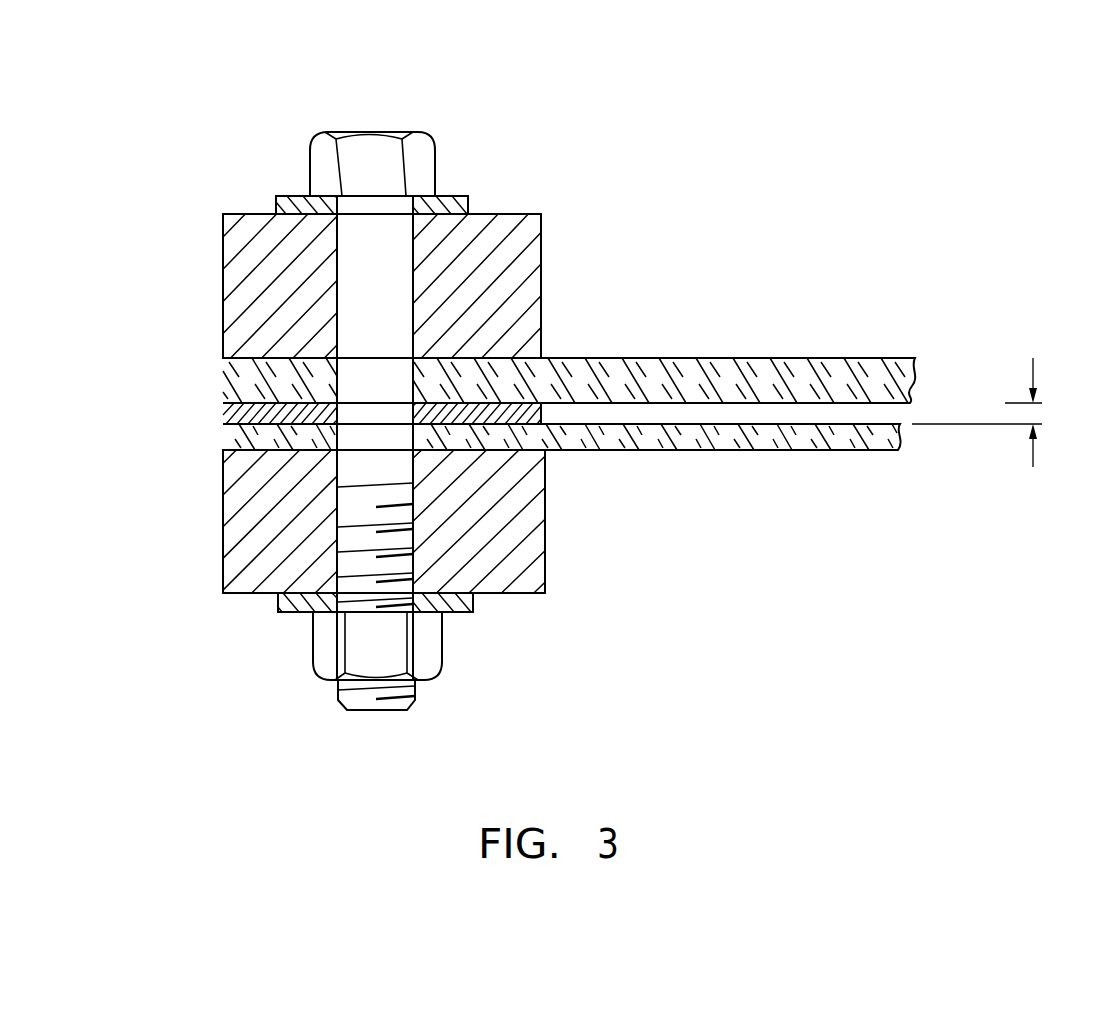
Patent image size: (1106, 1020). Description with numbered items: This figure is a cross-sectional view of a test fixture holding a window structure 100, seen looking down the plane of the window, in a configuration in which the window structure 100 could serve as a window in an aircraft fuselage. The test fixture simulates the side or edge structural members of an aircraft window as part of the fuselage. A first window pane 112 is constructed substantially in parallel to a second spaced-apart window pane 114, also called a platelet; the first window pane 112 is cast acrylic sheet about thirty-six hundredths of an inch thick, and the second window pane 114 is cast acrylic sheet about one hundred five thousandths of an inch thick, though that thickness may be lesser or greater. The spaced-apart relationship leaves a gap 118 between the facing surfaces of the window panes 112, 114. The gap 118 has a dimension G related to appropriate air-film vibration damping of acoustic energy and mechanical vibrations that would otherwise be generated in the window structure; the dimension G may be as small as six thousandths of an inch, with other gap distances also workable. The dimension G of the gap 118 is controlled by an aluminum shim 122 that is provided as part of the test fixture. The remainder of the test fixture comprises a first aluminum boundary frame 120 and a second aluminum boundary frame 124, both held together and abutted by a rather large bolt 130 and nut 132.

The window structure 100 is at (184, 120).
The first window pane 112 is at (740, 358).
The second window pane 114 is at (775, 450).
The gap 118 is at (932, 410).
The first aluminum boundary frame 120 is at (541, 260).
The aluminum shim 122 is at (543, 417).
The second aluminum boundary frame 124 is at (545, 512).
The bolt 130 is at (310, 168).
The nut 132 is at (313, 648).
The dimension of the gap G is at (1033, 358).